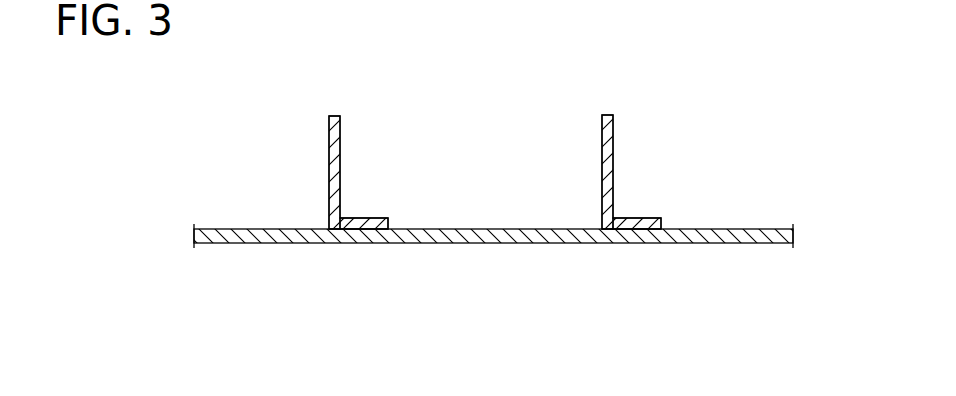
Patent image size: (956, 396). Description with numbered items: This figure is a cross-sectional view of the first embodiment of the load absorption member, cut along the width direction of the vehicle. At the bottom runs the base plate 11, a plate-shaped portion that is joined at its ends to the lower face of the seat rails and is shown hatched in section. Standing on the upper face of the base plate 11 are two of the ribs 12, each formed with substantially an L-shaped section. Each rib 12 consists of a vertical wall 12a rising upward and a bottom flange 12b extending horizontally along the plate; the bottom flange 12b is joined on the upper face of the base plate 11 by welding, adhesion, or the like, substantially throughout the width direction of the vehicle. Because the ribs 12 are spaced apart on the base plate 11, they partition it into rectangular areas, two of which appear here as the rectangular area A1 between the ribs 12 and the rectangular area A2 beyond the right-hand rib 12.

The base plate 11 is at (265, 243).
The rib 12 is at (341, 133).
The vertical wall 12a is at (333, 165).
The bottom flange 12b is at (362, 229).
The rectangular area A1 is at (483, 229).
The rectangular area A2 is at (738, 229).